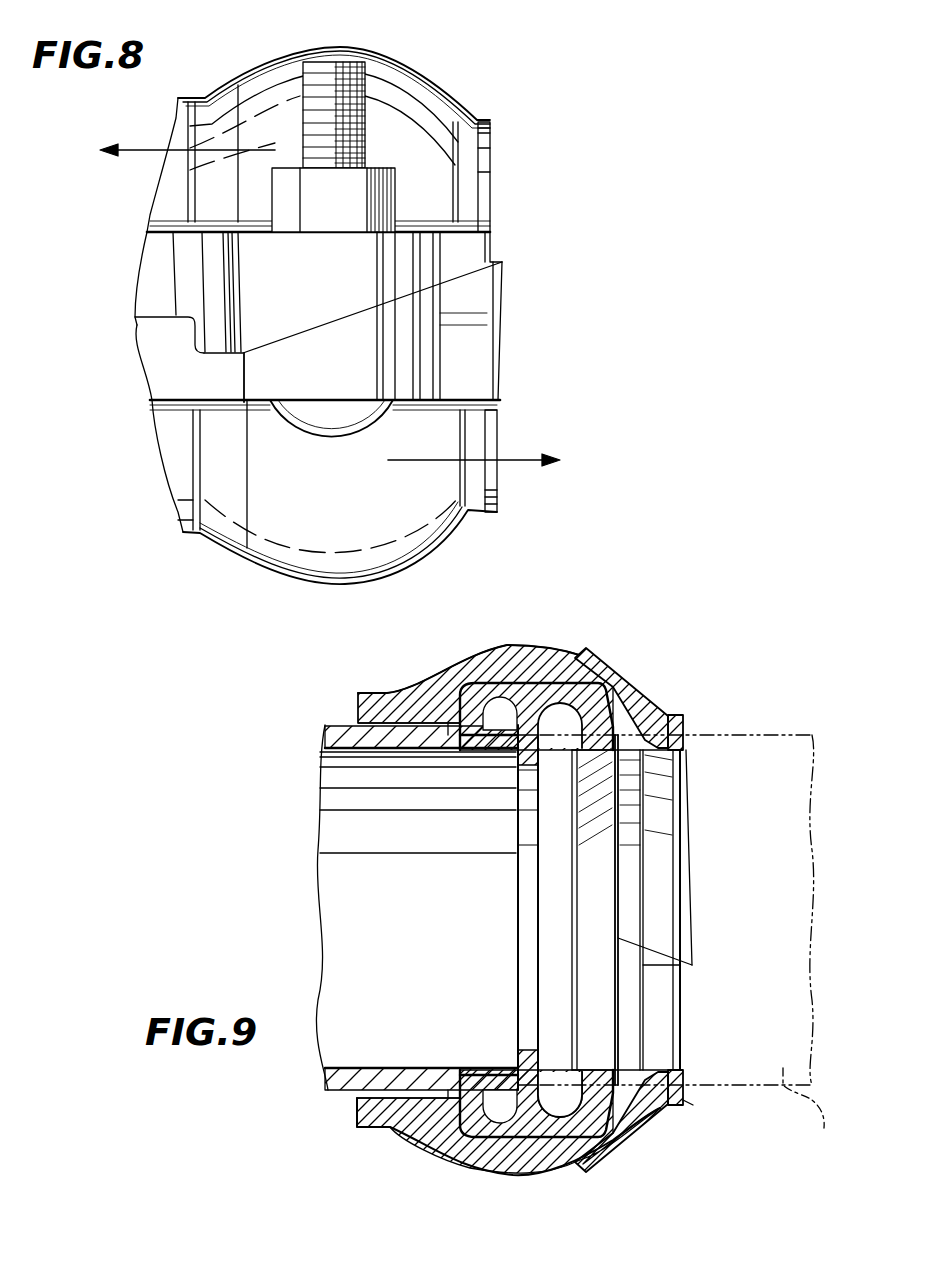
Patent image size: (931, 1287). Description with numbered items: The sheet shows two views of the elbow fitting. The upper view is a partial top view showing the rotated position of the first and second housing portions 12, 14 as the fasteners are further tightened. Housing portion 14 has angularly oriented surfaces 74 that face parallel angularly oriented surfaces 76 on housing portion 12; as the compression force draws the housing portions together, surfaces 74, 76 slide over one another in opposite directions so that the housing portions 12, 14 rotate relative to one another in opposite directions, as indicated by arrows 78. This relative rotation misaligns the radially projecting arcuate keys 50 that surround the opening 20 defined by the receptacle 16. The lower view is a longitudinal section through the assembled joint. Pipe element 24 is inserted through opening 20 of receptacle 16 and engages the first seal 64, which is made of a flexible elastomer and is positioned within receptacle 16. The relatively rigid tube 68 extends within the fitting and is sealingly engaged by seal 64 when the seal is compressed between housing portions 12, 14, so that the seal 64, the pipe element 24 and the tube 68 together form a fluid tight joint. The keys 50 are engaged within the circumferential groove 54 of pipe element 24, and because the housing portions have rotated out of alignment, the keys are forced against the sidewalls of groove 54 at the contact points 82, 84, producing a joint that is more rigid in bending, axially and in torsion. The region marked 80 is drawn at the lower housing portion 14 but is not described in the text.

In FIG. 8, the first housing portion 12 is at (335, 578).
In FIG. 9, the first housing portion 12 is at (515, 648).
In FIG. 8, the second housing portion 14 is at (436, 94).
In FIG. 9, the second housing portion 14 is at (520, 1172).
In FIG. 8, the first receptacle 16 is at (500, 342).
In FIG. 9, the first receptacle 16 is at (690, 832).
In FIG. 9, the opening 20 is at (640, 888).
In FIG. 9, the pipe element 24 is at (689, 948).
In FIG. 8, the keys 50 is at (492, 249).
In FIG. 9, the keys 50 is at (670, 716).
In FIG. 9, the circumferential groove 54 is at (690, 1106).
In FIG. 9, the first seal 64 is at (582, 690).
In FIG. 9, the tube 68 is at (338, 1082).
In FIG. 8, the angularly oriented surfaces 74 is at (306, 330).
In FIG. 8, the angularly oriented surfaces 76 is at (365, 350).
In FIG. 8, the arrows 78 is at (131, 150).
In FIG. 9, the pocket 80 is at (548, 1140).
In FIG. 9, the contact point 82 is at (690, 950).
In FIG. 9, the contact point 84 is at (650, 975).